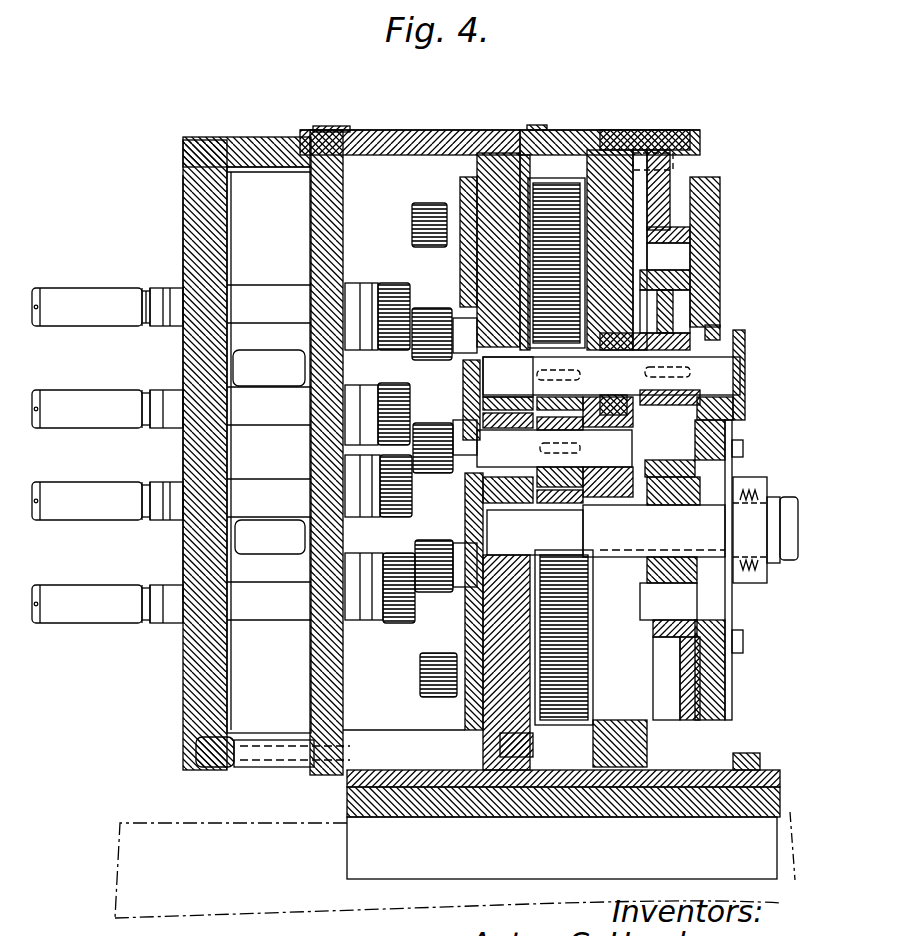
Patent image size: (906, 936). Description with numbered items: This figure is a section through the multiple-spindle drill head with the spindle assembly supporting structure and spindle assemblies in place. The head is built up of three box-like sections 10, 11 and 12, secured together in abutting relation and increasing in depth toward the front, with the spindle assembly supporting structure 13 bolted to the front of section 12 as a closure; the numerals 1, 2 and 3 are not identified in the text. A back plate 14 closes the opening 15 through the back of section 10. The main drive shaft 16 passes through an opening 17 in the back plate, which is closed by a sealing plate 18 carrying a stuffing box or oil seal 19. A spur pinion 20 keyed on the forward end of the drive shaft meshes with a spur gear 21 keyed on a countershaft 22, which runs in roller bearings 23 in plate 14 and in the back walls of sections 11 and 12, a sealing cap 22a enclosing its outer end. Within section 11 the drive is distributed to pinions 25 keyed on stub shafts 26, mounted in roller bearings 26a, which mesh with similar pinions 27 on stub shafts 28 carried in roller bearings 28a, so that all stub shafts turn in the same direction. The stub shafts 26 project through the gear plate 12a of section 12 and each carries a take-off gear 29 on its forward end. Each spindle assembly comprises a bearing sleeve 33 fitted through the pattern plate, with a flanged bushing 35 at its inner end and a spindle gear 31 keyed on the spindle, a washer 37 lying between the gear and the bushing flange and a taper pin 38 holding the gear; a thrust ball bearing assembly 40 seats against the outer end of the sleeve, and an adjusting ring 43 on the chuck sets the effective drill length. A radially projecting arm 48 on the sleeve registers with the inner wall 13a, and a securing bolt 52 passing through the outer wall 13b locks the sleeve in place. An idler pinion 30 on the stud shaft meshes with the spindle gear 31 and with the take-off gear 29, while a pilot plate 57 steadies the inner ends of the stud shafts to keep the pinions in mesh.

The gear box housing 1 is at (445, 128).
The base 2 is at (400, 865).
The foot 3 is at (175, 825).
The box-like section 10 is at (668, 130).
The box-like section 11 is at (578, 135).
The box-like section 12 is at (385, 135).
The gear plate 12a is at (455, 197).
The spindle assembly supporting structure 13 is at (186, 152).
The inner wall 13a is at (269, 450).
The outer wall 13b is at (190, 228).
The back plate 14 is at (710, 206).
The opening 15 is at (683, 255).
The main drive shaft 16 is at (787, 560).
The opening 17 is at (718, 613).
The sealing plate 18 is at (737, 440).
The stuffing box or oil seal 19 is at (748, 480).
The spur pinion 20 is at (695, 580).
The spur gear 21 is at (672, 304).
The countershaft 22 is at (728, 327).
The sealing cap 22a is at (745, 370).
The roller bearings 23 is at (460, 360).
The pinion 25 is at (530, 310).
The stub shaft 26 is at (470, 490).
The roller bearings 26a is at (508, 383).
The pinion 27 is at (392, 650).
The stub shaft 28 is at (620, 520).
The roller bearings 28a is at (535, 532).
The take-off gear 29 is at (414, 225).
The idler pinion 30 is at (408, 300).
The spindle gear 31 is at (384, 290).
The bearing sleeve 33 is at (257, 298).
The bushing 35 is at (372, 395).
The washer 37 is at (368, 612).
The taper pin 38 is at (95, 300).
The thrust ball bearing assembly 40 is at (153, 313).
The adjusting ring 43 is at (36, 290).
The radially projecting arm 48 is at (357, 562).
The securing bolt 52 is at (258, 336).
The pilot plate 57 is at (470, 715).